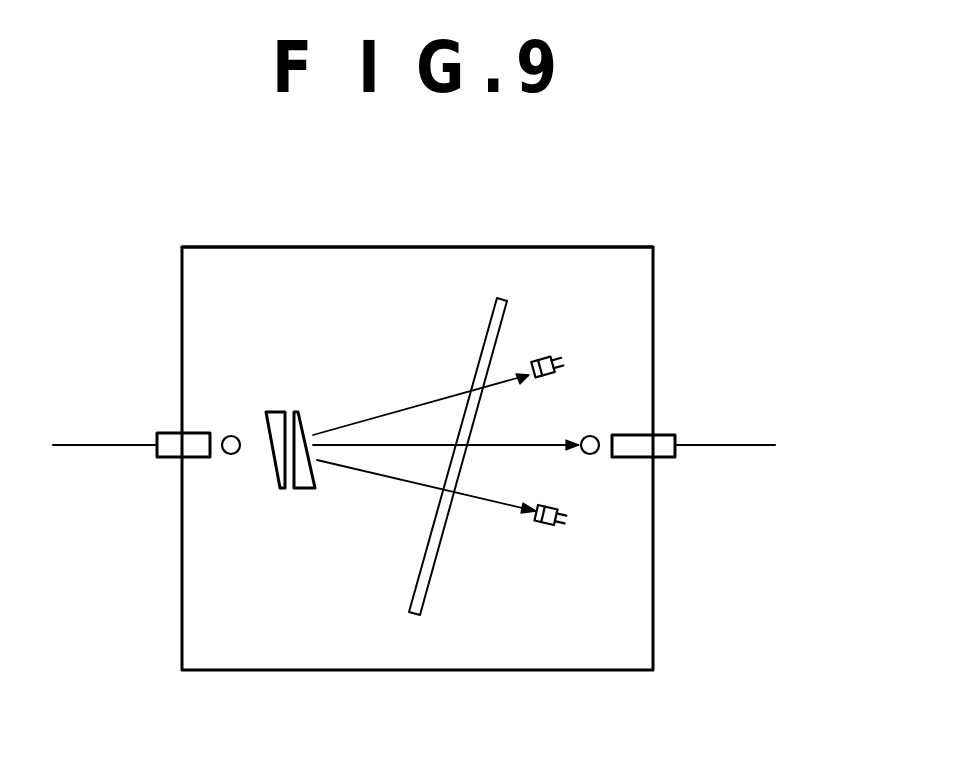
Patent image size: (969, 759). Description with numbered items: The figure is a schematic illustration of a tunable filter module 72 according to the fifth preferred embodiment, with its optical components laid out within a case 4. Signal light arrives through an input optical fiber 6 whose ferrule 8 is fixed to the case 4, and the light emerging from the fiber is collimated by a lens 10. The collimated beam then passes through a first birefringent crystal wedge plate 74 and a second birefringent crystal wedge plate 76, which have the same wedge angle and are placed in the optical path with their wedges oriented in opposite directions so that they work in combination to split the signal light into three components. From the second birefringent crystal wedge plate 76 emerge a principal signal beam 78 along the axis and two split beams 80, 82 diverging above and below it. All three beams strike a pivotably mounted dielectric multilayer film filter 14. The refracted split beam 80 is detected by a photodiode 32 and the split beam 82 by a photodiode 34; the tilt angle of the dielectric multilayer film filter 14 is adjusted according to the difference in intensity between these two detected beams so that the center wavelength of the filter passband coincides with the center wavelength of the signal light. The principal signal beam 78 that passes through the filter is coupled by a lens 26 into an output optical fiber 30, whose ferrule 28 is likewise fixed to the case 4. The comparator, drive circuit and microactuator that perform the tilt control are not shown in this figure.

The case 4 is at (303, 246).
The tunable filter module 72 is at (397, 246).
The input optical fiber 6 is at (96, 444).
The ferrule 8 is at (165, 458).
The lens 10 is at (230, 432).
The first birefringent crystal wedge plate 74 is at (276, 464).
The second birefringent crystal wedge plate 76 is at (303, 428).
The dielectric multilayer film filter 14 is at (490, 315).
The split beam 80 is at (413, 406).
The principal signal beam 78 is at (496, 444).
The split beam 82 is at (397, 483).
The photodiode 32 is at (546, 350).
The photodiode 34 is at (538, 535).
The lens 26 is at (592, 434).
The ferrule 28 is at (665, 458).
The output optical fiber 30 is at (722, 444).